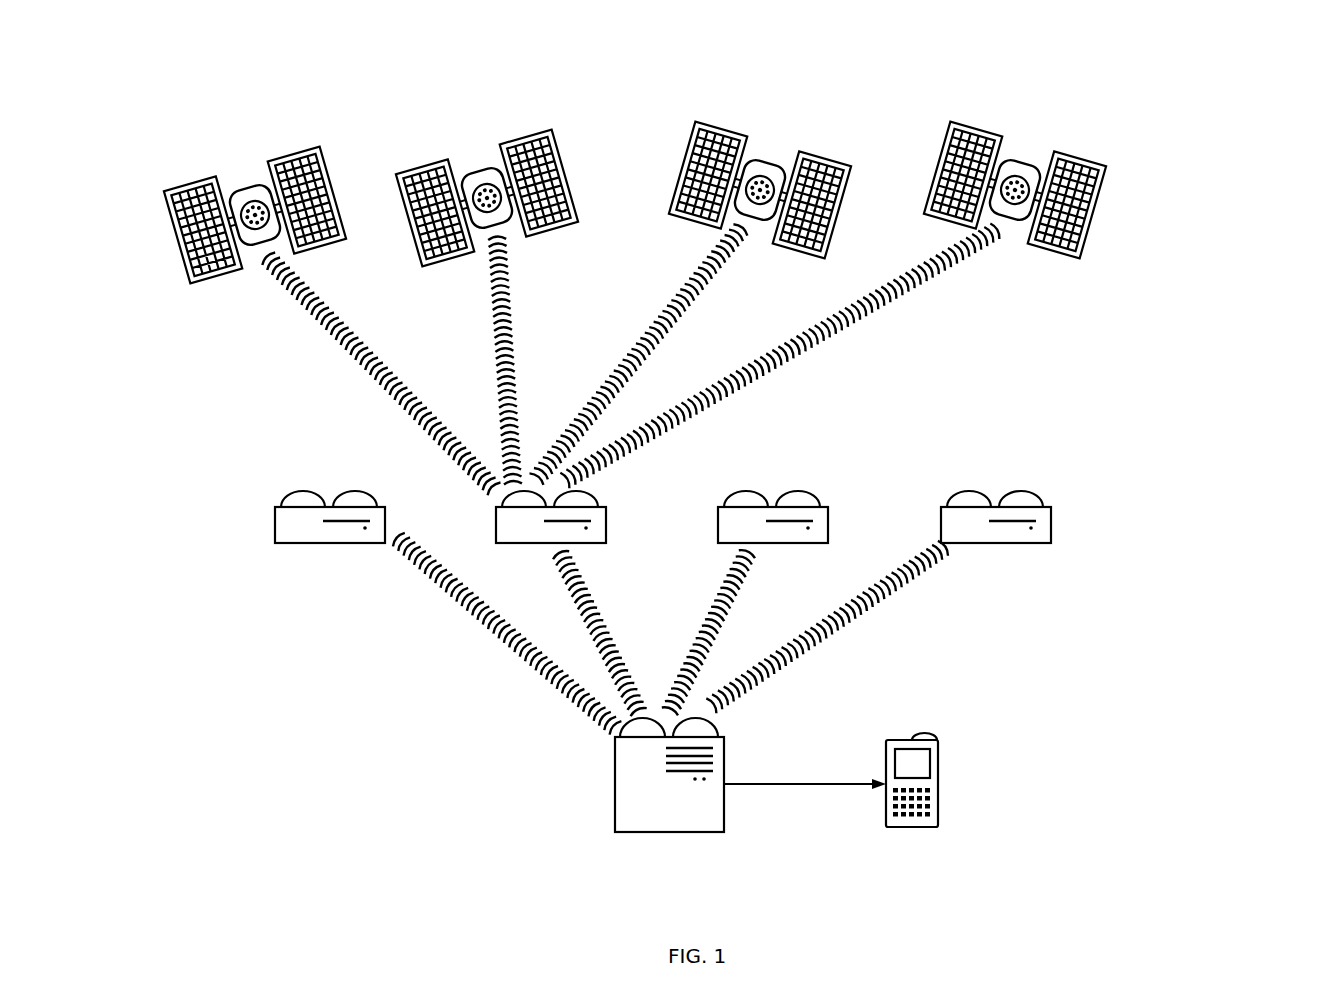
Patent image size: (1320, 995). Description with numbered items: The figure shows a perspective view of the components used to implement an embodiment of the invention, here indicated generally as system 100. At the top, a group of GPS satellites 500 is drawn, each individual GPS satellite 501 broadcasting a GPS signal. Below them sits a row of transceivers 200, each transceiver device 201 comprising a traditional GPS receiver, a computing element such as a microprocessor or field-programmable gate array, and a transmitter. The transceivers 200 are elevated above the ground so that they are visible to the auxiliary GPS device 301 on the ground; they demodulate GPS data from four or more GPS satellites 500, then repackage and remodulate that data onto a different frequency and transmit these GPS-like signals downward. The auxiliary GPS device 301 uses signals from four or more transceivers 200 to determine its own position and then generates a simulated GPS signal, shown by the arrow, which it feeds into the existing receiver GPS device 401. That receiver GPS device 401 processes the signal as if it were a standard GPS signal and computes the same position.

The positioning system 100 is at (722, 435).
The transceivers 200 is at (1118, 499).
The transceiver device 201 is at (278, 545).
The auxiliary GPS device 301 is at (615, 802).
The receiver GPS device 401 is at (938, 752).
The GPS satellites 500 is at (216, 90).
The GPS satellite 501 is at (242, 187).